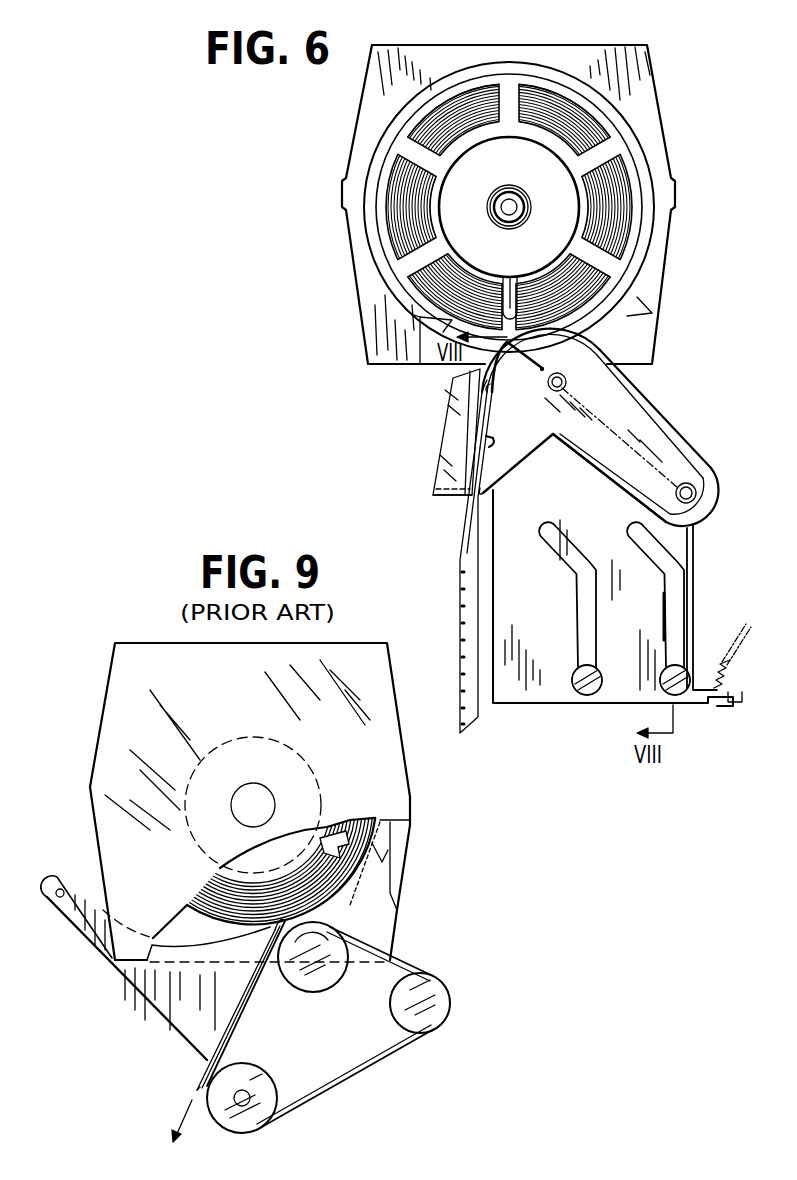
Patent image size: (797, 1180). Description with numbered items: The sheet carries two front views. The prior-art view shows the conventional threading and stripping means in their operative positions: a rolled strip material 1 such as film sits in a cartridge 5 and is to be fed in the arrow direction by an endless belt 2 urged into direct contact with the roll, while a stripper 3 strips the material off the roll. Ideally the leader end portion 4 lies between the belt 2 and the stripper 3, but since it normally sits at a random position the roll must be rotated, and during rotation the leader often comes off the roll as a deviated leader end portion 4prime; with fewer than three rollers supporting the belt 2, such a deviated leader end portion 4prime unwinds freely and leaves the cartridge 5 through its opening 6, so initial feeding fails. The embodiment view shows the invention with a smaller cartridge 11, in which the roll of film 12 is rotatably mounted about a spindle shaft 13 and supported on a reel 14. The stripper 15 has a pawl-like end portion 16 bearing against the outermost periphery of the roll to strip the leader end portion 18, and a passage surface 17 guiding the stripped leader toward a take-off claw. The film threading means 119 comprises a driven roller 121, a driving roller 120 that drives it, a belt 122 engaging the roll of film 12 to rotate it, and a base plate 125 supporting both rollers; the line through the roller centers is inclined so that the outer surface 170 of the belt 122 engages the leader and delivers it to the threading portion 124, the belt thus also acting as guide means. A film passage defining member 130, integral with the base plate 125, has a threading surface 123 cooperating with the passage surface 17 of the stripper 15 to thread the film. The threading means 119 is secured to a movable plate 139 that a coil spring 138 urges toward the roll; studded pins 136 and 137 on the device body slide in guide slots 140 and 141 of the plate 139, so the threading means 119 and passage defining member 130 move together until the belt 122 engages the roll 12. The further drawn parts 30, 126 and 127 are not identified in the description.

In FIG. 6, the smaller cartridge 11 is at (640, 58).
In FIG. 6, the roll of film 12 is at (580, 123).
In FIG. 6, the spindle shaft 13 is at (510, 192).
In FIG. 6, the reel 14 is at (630, 153).
In FIG. 6, the threading portion 124 is at (547, 330).
In FIG. 6, the bracket 30 is at (420, 350).
In FIG. 6, the film threading means 119 is at (596, 384).
In FIG. 6, the outer surface of the belt 170 is at (703, 361).
In FIG. 6, the driven roller 121 is at (586, 354).
In FIG. 6, the belt 122 is at (647, 400).
In FIG. 6, the base plate 125 is at (663, 447).
In FIG. 6, the driving roller 120 is at (707, 487).
In FIG. 6, the pivot pin 126 is at (698, 493).
In FIG. 6, the pivot pin 127 is at (548, 382).
In FIG. 6, the threading surface 123 is at (547, 500).
In FIG. 6, the film passage defining member 130 is at (500, 441).
In FIG. 6, the stripper 15 is at (455, 430).
In FIG. 6, the pawl-like end portion 16 is at (478, 373).
In FIG. 6, the passage surface 17 is at (472, 475).
In FIG. 6, the leader end portion 18 is at (463, 682).
In FIG. 6, the movable plate 139 is at (523, 683).
In FIG. 6, the guide slot 140 is at (577, 593).
In FIG. 6, the guide slot 141 is at (670, 617).
In FIG. 6, the studded pin 136 is at (587, 694).
In FIG. 6, the studded pin 137 is at (680, 690).
In FIG. 6, the coil spring 138 is at (737, 633).
In FIG. 9, the cartridge 5 is at (373, 673).
In FIG. 9, the rolled strip material 1 is at (352, 818).
In FIG. 9, the deviated leader end portion 4prime is at (350, 907).
In FIG. 9, the stripper 3 is at (190, 1020).
In FIG. 9, the opening 6 is at (380, 935).
In FIG. 9, the endless belt 2 is at (253, 1007).
In FIG. 9, the leader end portion 4 is at (205, 1070).